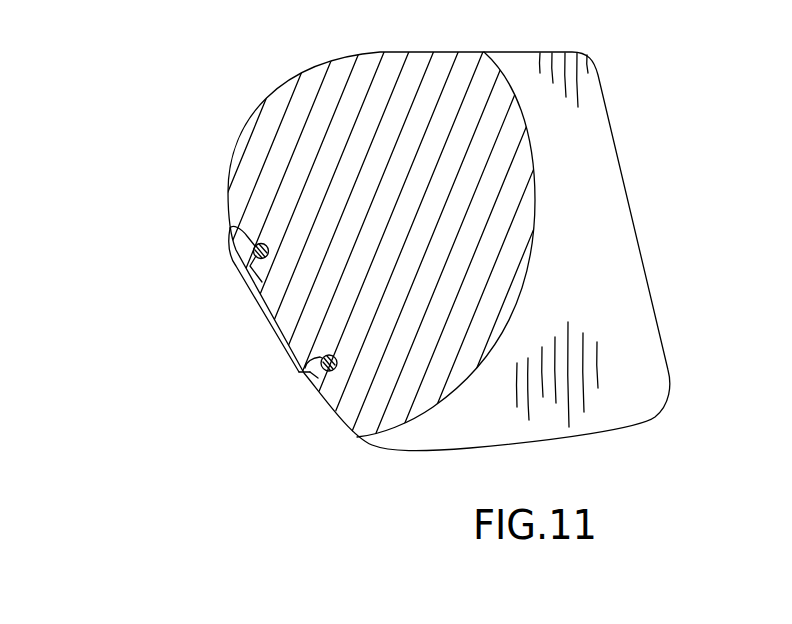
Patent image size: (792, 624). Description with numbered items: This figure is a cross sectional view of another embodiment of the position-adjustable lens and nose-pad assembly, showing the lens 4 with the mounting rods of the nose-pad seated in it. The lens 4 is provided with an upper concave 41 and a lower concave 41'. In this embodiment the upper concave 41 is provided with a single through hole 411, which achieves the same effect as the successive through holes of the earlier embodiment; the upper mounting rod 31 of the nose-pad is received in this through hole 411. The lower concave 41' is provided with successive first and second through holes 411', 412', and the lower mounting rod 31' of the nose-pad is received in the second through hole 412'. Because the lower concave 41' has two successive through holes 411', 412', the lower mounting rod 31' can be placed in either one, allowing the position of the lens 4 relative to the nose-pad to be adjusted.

The lens 4 is at (637, 376).
The upper concave 41 is at (220, 299).
The lower concave 41' is at (263, 383).
The upper mounting rod 31 is at (176, 218).
The first through hole 411 is at (261, 251).
The first through hole 411' is at (275, 421).
The lower mounting rod 31' is at (320, 449).
The second through hole 412' is at (329, 363).